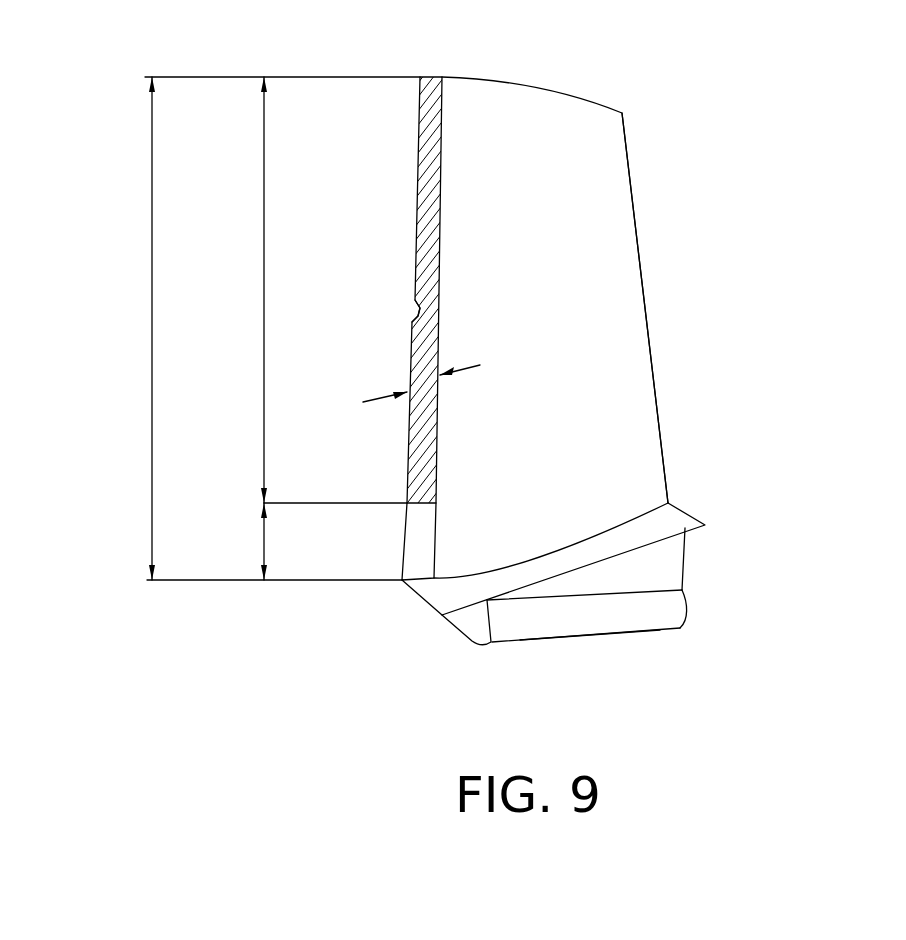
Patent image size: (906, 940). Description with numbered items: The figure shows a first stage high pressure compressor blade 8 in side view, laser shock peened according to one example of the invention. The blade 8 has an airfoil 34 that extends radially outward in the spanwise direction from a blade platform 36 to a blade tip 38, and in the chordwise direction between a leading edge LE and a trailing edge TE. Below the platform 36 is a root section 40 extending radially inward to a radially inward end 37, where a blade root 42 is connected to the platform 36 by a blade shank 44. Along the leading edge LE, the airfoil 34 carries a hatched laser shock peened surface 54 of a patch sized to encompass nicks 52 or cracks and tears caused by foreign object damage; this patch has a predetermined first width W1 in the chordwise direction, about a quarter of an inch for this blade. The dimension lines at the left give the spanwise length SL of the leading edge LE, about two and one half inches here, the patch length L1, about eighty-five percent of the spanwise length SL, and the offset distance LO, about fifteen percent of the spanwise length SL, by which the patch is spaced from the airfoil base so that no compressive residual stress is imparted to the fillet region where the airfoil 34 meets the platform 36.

The fan blade 8 is at (652, 108).
The airfoil 34 is at (590, 301).
The blade platform 36 is at (677, 521).
The radially inward end 37 is at (597, 637).
The blade tip 38 is at (558, 92).
The root section 40 is at (682, 592).
The blade root 42 is at (458, 623).
The blade shank 44 is at (685, 550).
The nicks 52 is at (418, 316).
The laser shock peened surface 54 is at (430, 440).
The leading edge LE is at (434, 305).
The trailing edge TE is at (645, 308).
The first width W1 is at (478, 368).
The spanwise length SL is at (152, 302).
The patch length L1 is at (264, 300).
The offset distance LO is at (264, 540).